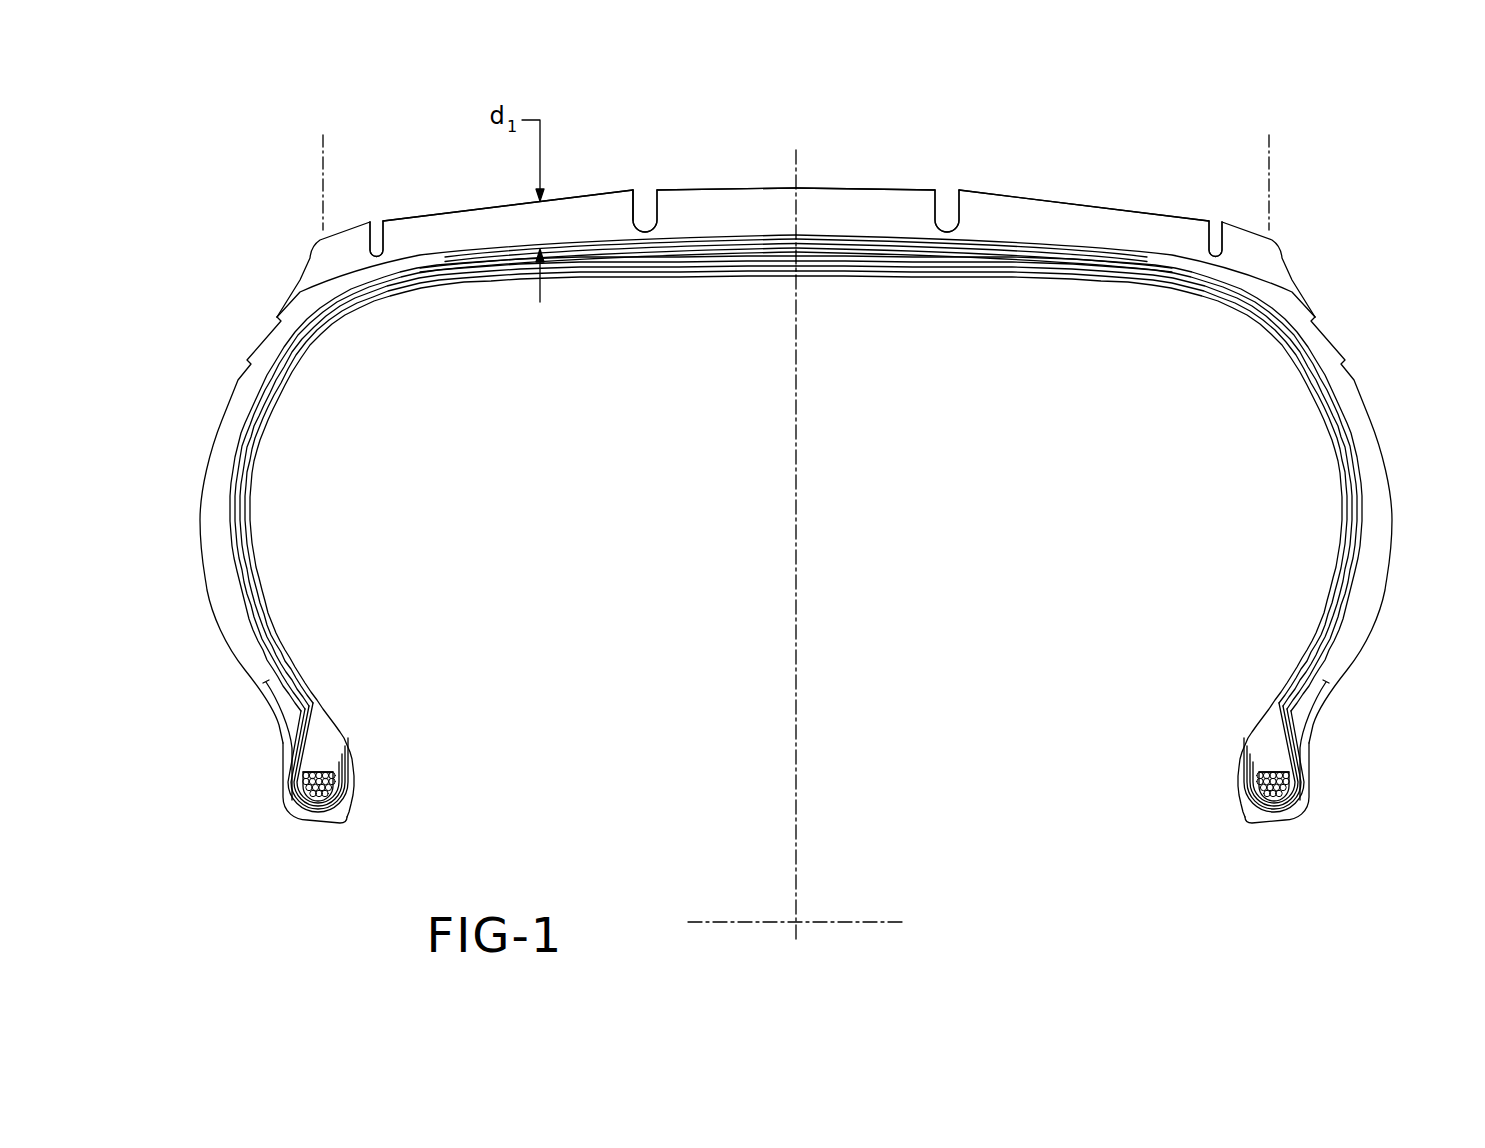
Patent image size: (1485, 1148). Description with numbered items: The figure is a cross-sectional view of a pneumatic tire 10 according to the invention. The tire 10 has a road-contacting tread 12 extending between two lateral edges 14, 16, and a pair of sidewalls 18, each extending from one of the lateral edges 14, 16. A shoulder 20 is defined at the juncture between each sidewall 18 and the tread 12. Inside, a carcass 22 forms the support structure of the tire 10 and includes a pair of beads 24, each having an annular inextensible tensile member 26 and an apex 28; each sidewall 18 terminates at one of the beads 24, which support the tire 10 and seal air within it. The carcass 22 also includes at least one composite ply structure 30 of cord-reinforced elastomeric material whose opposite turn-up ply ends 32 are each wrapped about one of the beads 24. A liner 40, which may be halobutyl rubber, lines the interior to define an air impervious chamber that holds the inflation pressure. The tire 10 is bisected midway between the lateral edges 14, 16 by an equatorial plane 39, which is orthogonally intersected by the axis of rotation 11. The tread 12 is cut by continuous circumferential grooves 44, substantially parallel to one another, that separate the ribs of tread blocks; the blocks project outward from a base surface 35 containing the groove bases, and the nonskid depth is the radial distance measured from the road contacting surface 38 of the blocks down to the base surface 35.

The pneumatic tire 10 is at (170, 181).
The axis of rotation 11 is at (863, 922).
The tread 12 is at (724, 176).
The lateral edge 14 is at (1270, 137).
The lateral edge 16 is at (322, 137).
The sidewall 18 is at (205, 540).
The shoulder 20 is at (313, 256).
The carcass 22 is at (901, 283).
The bead 24 is at (311, 748).
The annular inextensible tensile member 26 is at (323, 793).
The apex 28 is at (325, 765).
The composite ply structure 30 is at (1318, 405).
The turn-up ply end 32 is at (270, 698).
The base surface 35 is at (632, 214).
The road contacting surface 38 is at (450, 214).
The equatorial plane 39 is at (800, 170).
The liner 40 is at (300, 368).
The circumferential groove 44 is at (377, 244).